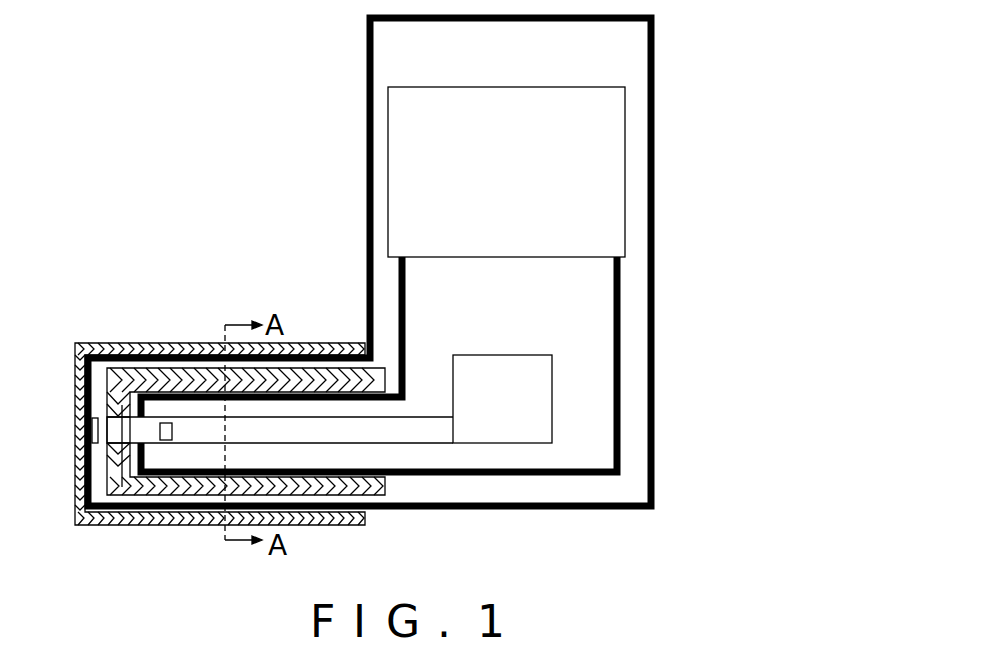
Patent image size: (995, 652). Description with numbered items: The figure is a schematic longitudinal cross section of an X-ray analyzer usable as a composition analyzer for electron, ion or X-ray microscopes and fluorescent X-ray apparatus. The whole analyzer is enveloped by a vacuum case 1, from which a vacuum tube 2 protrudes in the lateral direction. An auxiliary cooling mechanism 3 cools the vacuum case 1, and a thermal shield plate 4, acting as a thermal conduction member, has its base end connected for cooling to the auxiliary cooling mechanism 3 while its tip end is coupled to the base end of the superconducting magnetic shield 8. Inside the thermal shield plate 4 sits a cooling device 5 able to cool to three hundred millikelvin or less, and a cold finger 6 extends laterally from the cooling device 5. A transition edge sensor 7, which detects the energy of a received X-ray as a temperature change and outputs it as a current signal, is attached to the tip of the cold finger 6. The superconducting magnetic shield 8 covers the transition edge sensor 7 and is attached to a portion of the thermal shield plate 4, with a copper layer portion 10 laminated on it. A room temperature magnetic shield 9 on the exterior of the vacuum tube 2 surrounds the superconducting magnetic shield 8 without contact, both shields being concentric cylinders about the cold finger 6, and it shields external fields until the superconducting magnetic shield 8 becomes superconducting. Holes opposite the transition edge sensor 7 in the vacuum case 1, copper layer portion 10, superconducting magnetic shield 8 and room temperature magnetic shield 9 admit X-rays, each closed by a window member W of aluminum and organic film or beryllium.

The vacuum case 1 is at (653, 58).
The vacuum tube 2 is at (123, 526).
The auxiliary cooling mechanism 3 is at (626, 158).
The thermal shield plate 4 is at (622, 444).
The cooling device 5 is at (542, 403).
The cold finger 6 is at (380, 414).
The transition edge sensor 7 is at (160, 424).
The superconducting magnetic shield 8 is at (336, 378).
The room temperature magnetic shield 9 is at (147, 341).
The copper layer portion 10 is at (197, 526).
The window member W is at (78, 432).